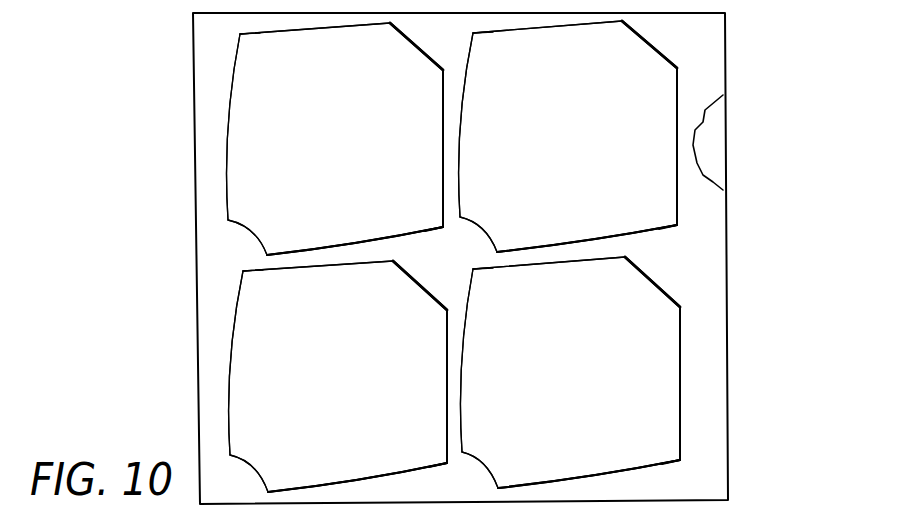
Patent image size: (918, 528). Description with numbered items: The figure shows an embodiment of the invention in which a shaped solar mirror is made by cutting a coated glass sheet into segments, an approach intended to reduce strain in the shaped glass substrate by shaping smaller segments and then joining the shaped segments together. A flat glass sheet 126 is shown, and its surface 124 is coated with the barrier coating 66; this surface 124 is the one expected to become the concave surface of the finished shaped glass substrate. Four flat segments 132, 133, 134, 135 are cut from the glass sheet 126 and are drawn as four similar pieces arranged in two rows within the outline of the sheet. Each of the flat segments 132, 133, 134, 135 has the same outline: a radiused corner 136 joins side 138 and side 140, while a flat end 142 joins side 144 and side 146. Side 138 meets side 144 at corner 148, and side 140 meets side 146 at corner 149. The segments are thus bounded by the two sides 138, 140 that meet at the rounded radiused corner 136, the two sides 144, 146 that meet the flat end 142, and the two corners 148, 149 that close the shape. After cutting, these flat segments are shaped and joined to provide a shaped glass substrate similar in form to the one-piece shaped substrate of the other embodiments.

The barrier coating 66 is at (707, 217).
The surface of flat glass sheet 124 is at (718, 142).
The flat glass sheet 126 is at (150, 108).
The flat segment 132 is at (353, 393).
The flat segment 133 is at (587, 390).
The flat segment 134 is at (352, 155).
The flat segment 135 is at (585, 153).
The radiused corner 136 is at (250, 232).
The side 138 is at (228, 148).
The side 140 is at (343, 247).
The flat end 142 is at (423, 52).
The side 144 is at (318, 30).
The side 146 is at (443, 145).
The corner 148 is at (243, 35).
The corner 149 is at (443, 227).